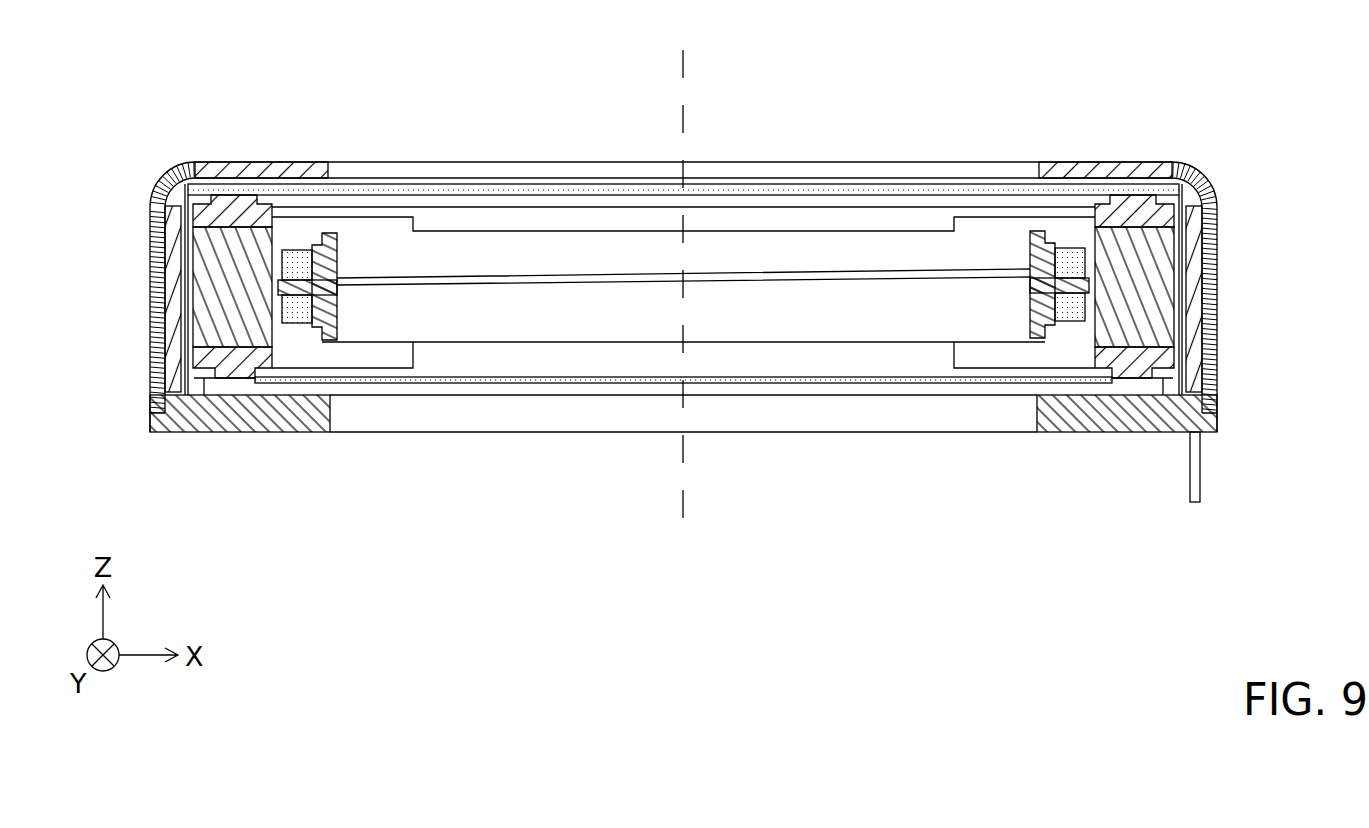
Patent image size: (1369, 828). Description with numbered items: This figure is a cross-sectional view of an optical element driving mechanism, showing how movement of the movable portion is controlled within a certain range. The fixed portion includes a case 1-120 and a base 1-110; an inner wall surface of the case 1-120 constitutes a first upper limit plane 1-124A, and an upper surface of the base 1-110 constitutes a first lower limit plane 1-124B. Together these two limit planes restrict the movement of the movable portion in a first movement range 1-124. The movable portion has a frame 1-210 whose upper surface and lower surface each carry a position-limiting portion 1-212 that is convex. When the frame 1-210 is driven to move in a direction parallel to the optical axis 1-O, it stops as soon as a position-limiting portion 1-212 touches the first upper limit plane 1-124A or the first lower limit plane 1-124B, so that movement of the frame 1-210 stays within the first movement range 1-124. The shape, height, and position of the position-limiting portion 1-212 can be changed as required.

The optical axis 1-O is at (683, 272).
The base 1-110 is at (247, 410).
The case 1-120 is at (1219, 290).
The first movement range 1-124 is at (689, 288).
The first upper limit plane 1-124A is at (1175, 192).
The first lower limit plane 1-124B is at (1165, 388).
The frame 1-210 is at (705, 323).
The position-limiting portion 1-212 is at (1130, 197).